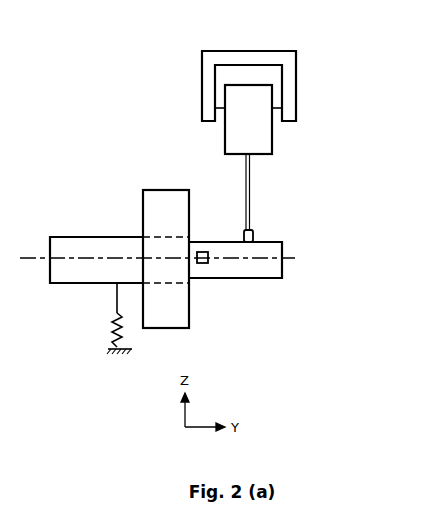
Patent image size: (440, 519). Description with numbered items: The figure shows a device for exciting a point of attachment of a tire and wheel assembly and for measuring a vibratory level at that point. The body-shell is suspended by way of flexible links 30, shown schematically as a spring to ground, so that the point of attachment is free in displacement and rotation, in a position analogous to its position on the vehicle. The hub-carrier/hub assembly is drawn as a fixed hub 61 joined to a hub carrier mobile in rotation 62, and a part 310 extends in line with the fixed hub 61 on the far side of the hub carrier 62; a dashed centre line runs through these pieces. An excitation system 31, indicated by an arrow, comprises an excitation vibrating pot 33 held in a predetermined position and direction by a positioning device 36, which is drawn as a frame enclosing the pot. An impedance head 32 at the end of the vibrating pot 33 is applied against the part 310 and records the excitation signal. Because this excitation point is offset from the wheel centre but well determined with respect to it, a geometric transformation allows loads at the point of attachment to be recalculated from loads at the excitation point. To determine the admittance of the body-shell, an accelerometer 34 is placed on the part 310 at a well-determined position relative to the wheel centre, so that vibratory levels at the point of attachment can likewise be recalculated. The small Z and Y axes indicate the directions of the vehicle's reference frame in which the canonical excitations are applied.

The positioning device 36 is at (296, 67).
The excitation vibrating pot 33 is at (273, 148).
The excitation system 31 is at (322, 102).
The impedance head 32 is at (254, 235).
The hub carrier mobile in rotation 62 is at (157, 223).
The fixed hub 61 is at (102, 270).
The part 310 is at (253, 268).
The accelerometer 34 is at (206, 263).
The flexible links 30 is at (115, 313).